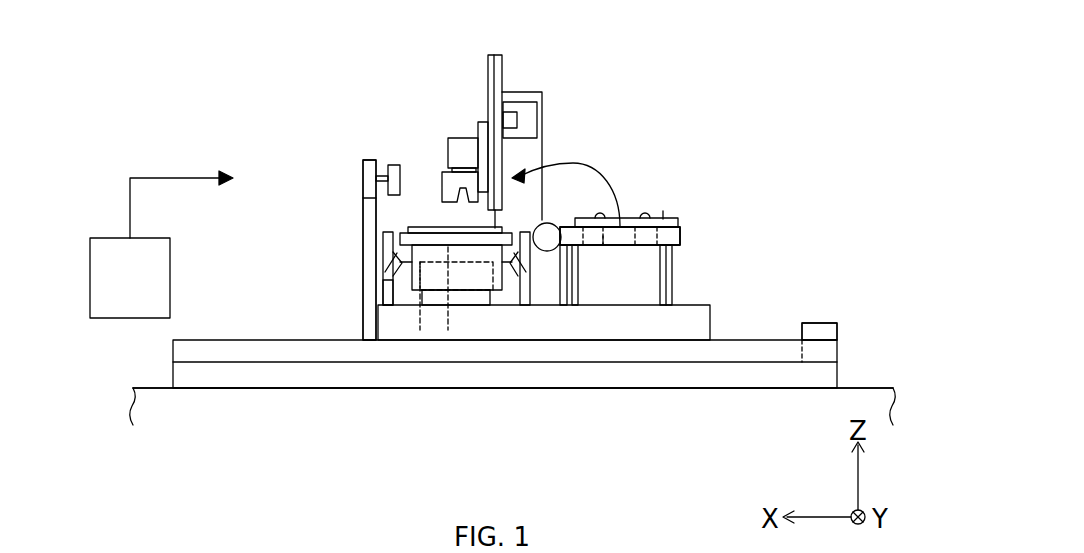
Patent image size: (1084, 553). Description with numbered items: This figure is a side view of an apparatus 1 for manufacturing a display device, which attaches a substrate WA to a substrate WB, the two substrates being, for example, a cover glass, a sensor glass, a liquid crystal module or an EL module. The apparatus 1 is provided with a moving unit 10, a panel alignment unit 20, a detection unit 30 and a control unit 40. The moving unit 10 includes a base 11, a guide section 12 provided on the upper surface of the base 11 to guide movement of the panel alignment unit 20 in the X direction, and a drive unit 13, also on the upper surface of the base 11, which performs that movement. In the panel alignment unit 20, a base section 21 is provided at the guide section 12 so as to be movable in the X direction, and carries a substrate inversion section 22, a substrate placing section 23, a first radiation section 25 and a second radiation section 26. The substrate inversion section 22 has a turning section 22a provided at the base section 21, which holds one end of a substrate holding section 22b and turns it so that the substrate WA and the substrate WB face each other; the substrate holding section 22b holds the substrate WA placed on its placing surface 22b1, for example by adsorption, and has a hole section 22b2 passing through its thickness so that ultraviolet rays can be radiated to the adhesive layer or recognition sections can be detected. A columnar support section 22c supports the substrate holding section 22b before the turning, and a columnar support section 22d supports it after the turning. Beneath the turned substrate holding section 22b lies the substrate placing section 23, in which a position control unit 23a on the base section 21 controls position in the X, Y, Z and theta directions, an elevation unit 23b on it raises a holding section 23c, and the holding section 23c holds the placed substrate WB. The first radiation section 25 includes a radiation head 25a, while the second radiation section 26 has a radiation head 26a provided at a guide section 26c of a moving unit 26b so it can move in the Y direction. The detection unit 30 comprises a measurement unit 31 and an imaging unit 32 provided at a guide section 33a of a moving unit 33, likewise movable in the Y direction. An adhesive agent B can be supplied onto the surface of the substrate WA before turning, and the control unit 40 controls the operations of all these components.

The apparatus for manufacturing a display device 1 is at (785, 100).
The moving unit 10 is at (807, 311).
The base 11 is at (752, 378).
The guide section 12 is at (822, 352).
The drive unit 13 is at (822, 333).
The panel alignment unit 20 is at (635, 175).
The base section 21 is at (620, 330).
The substrate inversion section 22 is at (690, 219).
The turning section 22a is at (548, 240).
The substrate holding section 22b is at (679, 236).
The placing surface 22b1 is at (667, 221).
The hole section 22b2 is at (603, 236).
The support section 22c is at (668, 285).
The support section 22d is at (383, 296).
The substrate placing section 23 is at (442, 314).
The position control unit 23a is at (485, 298).
The elevation unit 23b is at (420, 330).
The holding section 23c is at (448, 330).
The first radiation section 25 is at (408, 300).
The radiation head 25a is at (388, 275).
The second radiation section 26 is at (277, 92).
The radiation head 26a is at (395, 168).
The moving unit 26b is at (368, 189).
The guide section 26c is at (382, 178).
The detection unit 30 is at (522, 83).
The measurement unit 31 is at (472, 180).
The imaging unit 32 is at (461, 150).
The moving unit 33 is at (531, 101).
The guide section 33a is at (485, 122).
The control unit 40 is at (125, 297).
The adhesive agent B is at (598, 214).
The substrate WA is at (656, 218).
The substrate WB is at (427, 230).